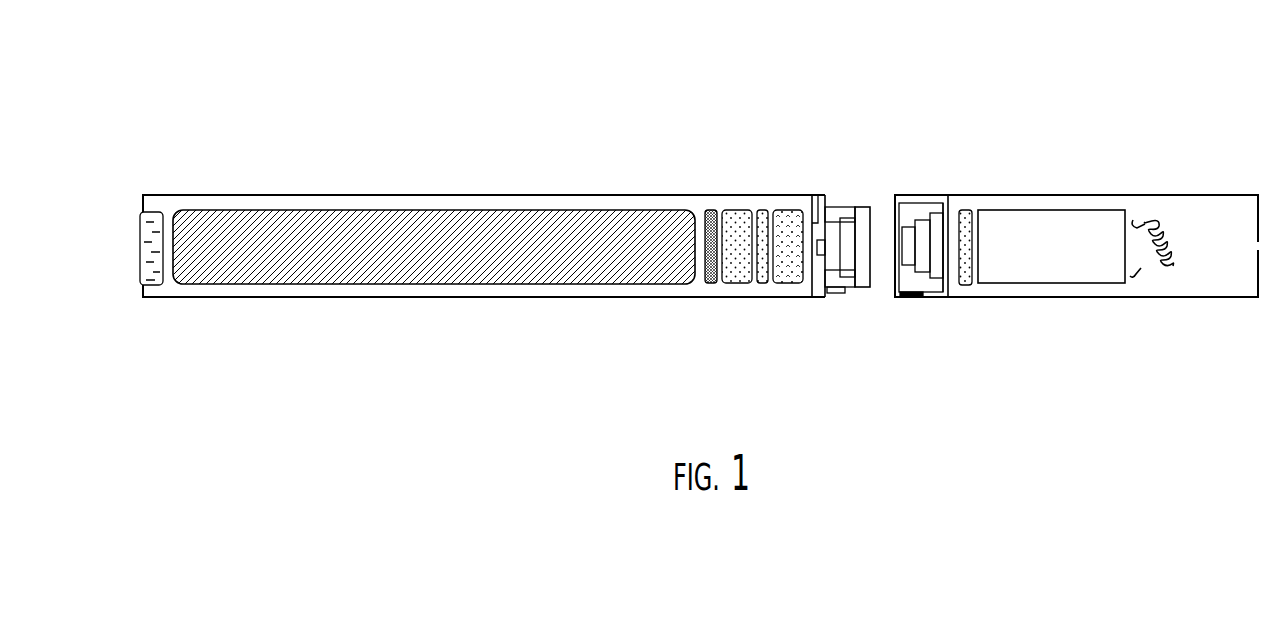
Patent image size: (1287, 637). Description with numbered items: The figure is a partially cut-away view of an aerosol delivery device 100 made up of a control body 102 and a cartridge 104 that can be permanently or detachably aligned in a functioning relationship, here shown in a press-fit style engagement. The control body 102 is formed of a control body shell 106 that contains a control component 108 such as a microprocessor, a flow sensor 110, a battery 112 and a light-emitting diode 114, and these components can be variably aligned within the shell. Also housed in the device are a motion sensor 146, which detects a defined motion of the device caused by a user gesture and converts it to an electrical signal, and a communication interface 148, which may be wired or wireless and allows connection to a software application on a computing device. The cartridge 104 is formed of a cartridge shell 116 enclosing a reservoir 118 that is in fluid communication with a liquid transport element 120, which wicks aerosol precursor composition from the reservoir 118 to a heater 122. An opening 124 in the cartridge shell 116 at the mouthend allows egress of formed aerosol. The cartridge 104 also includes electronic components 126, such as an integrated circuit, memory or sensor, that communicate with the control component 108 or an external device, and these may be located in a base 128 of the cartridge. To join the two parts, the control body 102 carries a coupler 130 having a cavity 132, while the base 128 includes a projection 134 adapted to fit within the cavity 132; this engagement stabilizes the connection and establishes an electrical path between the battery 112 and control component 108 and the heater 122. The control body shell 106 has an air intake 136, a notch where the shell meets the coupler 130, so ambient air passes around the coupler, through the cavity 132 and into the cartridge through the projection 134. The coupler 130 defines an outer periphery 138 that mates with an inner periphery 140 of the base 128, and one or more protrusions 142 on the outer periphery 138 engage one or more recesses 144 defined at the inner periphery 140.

The aerosol delivery device 100 is at (230, 93).
The control body 102 is at (210, 160).
The cartridge 104 is at (1088, 165).
The control body shell 106 is at (270, 297).
The control component 108 is at (738, 277).
The flow sensor 110 is at (793, 277).
The battery 112 is at (407, 284).
The light-emitting diode 114 is at (152, 286).
The cartridge shell 116 is at (1037, 297).
The reservoir 118 is at (1071, 284).
The liquid transport element 120 is at (1140, 274).
The heater 122 is at (1158, 270).
The opening 124 is at (1257, 240).
The electronic components 126 is at (965, 286).
The base 128 is at (944, 298).
The coupler 130 is at (850, 289).
The cavity 132 is at (845, 206).
The projection 134 is at (925, 204).
The air intake 136 is at (812, 196).
The outer periphery 138 is at (853, 206).
The inner periphery 140 is at (915, 203).
The protrusions 142 is at (834, 294).
The recesses 144 is at (913, 298).
The motion sensor 146 is at (710, 209).
The communication interface 148 is at (763, 209).